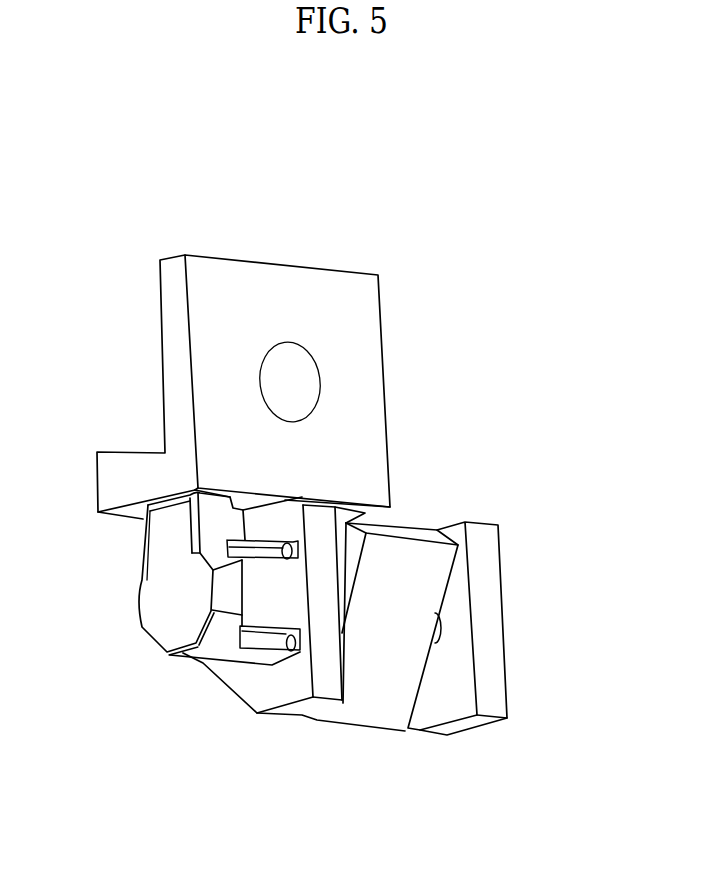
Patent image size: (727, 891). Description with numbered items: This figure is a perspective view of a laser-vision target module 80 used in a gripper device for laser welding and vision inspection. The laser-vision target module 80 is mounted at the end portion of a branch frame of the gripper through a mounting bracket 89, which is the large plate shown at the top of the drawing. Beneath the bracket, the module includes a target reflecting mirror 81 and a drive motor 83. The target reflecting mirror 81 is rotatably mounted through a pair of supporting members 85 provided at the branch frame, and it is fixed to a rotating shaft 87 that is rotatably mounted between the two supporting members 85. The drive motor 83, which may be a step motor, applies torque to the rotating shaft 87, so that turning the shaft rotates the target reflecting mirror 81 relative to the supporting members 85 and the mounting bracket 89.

The laser-vision target module 80 is at (291, 122).
The target reflecting mirror 81 is at (373, 692).
The drive motor 83 is at (168, 602).
The supporting members 85 is at (247, 687).
The rotating shaft 87 is at (438, 640).
The mounting bracket 89 is at (353, 327).